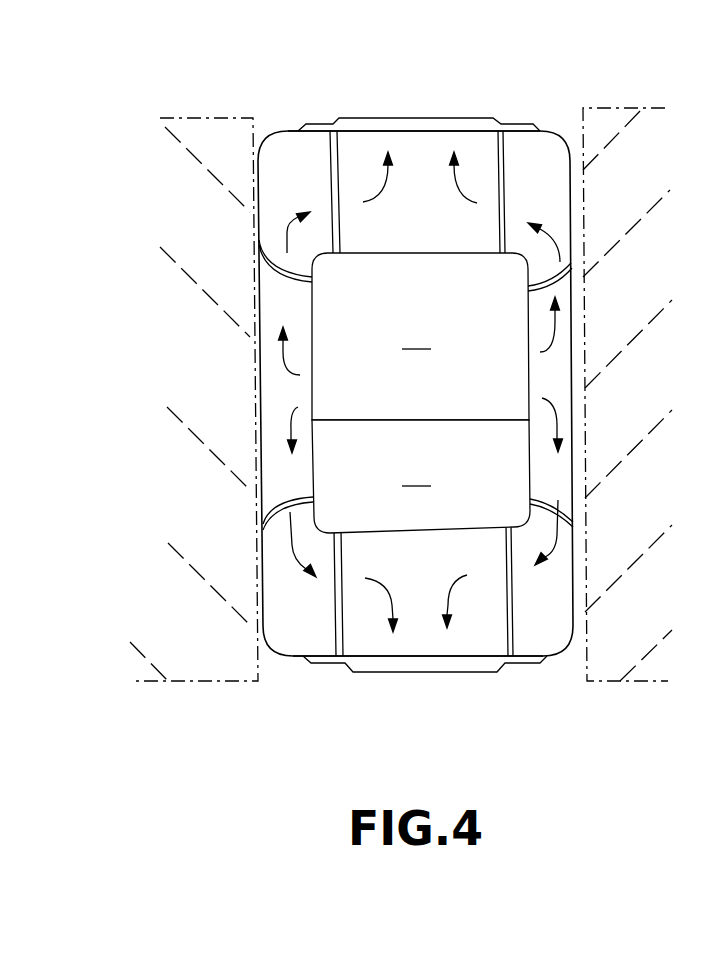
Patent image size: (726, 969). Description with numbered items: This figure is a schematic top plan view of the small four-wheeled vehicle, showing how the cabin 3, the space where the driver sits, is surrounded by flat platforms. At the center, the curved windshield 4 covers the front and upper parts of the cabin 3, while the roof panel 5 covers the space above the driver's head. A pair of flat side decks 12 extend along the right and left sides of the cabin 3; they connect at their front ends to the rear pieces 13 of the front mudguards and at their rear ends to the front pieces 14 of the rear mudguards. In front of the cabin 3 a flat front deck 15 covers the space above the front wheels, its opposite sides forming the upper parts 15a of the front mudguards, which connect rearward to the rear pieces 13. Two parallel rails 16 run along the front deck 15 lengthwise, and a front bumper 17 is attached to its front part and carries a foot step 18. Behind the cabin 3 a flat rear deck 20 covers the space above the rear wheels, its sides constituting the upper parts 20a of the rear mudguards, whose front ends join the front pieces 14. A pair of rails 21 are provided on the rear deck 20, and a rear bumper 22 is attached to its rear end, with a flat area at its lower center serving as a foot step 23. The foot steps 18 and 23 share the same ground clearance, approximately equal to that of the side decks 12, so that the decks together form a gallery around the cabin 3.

The cabin 3 is at (300, 318).
The curved windshield 4 is at (420, 336).
The roof panel 5 is at (421, 476).
The side decks 12 is at (280, 404).
The rear pieces of front mudguards 13 is at (278, 260).
The front pieces of rear mudguards 14 is at (272, 515).
The front deck 15 is at (415, 153).
The upper parts of the front mudguards 15a is at (287, 153).
The parallel rails 16 is at (333, 140).
The front bumper 17 is at (452, 132).
The foot step 18 is at (365, 120).
The rear deck 20 is at (422, 638).
The upper parts of the rear mudguards 20a is at (290, 640).
The rails 21 is at (338, 657).
The rear bumper 22 is at (373, 660).
The foot step 23 is at (466, 673).